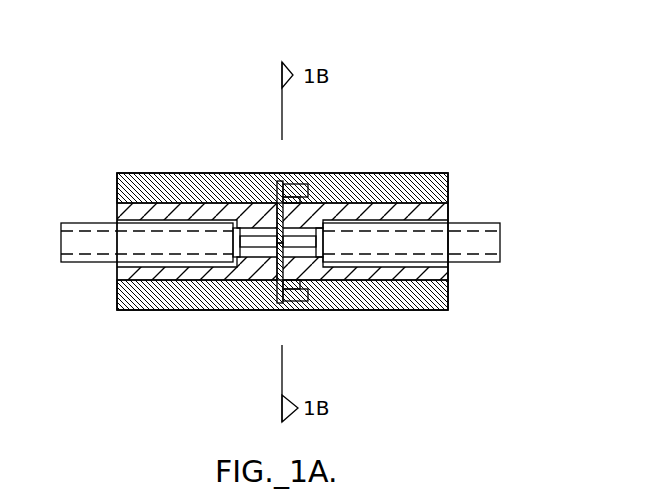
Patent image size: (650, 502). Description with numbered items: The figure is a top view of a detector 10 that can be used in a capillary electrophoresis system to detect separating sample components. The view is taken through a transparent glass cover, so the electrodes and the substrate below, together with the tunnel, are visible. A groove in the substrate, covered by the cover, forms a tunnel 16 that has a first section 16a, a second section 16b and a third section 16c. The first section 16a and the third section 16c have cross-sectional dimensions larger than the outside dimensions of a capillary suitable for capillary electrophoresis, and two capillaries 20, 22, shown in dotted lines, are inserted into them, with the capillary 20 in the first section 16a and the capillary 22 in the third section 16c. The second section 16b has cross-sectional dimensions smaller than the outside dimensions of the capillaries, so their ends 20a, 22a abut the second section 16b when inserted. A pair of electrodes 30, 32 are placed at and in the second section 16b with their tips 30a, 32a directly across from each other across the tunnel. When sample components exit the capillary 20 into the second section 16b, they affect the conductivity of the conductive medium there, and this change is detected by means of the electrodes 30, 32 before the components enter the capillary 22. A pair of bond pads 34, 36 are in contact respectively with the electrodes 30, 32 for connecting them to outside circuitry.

The detector 10 is at (538, 139).
The tunnel 16 is at (450, 60).
The first section 16a is at (153, 176).
The second section 16b is at (243, 217).
The third section 16c is at (448, 192).
The capillary 20 is at (75, 223).
The end 20a is at (205, 265).
The capillary 22 is at (496, 225).
The end 22a is at (335, 265).
The electrode 30 is at (320, 203).
The tip 30a is at (313, 202).
The electrode 32 is at (270, 290).
The tip 32a is at (315, 302).
The bond pad 34 is at (295, 176).
The bond pad 36 is at (283, 302).